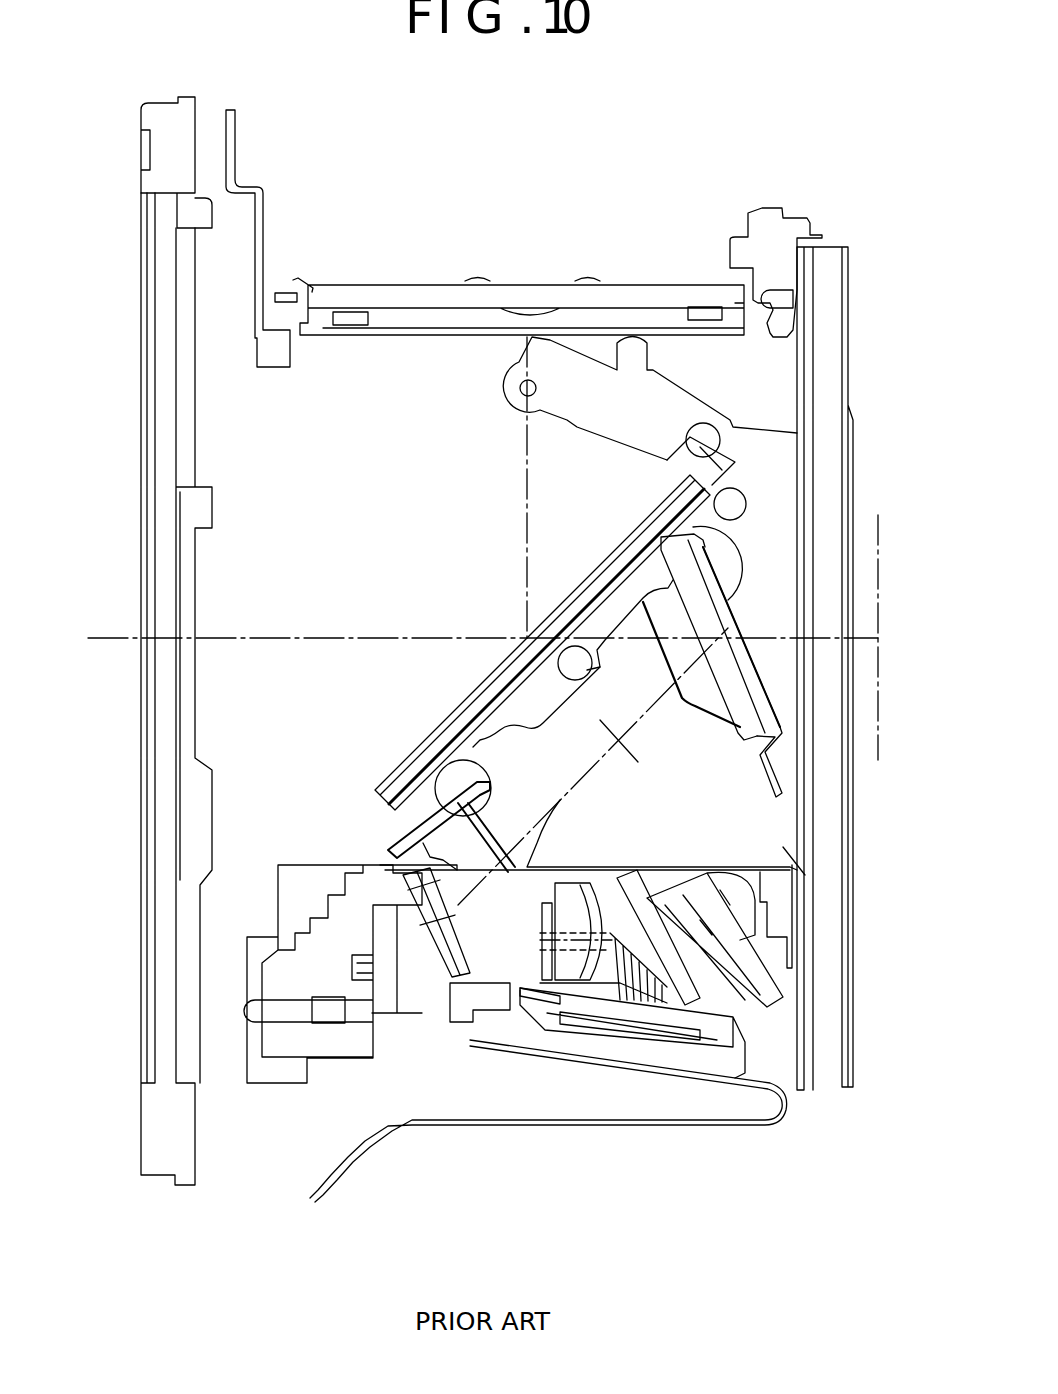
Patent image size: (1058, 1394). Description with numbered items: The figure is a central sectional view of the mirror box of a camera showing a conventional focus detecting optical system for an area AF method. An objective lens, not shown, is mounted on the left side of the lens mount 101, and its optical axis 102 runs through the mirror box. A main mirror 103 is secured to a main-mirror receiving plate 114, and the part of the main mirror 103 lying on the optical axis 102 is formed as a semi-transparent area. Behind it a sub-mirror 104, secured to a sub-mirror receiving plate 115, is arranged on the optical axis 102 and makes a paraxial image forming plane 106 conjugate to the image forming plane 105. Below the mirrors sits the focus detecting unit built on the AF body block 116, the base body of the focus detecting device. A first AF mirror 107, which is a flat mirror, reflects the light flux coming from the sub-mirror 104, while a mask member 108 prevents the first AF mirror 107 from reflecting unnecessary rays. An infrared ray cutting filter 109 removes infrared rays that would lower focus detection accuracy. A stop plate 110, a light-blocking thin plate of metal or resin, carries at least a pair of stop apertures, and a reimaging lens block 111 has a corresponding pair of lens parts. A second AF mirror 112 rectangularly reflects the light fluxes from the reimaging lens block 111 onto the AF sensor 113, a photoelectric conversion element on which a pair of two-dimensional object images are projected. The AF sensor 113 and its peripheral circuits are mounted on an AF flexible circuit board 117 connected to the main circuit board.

The lens mount 101 is at (147, 117).
The optical axis 102 is at (120, 640).
The main mirror 103 is at (438, 742).
The sub-mirror 104 is at (705, 602).
The image forming plane 105 is at (880, 548).
The paraxial image forming plane 106 is at (627, 748).
The first AF mirror 107 is at (418, 897).
The mask member 108 is at (430, 985).
The infrared ray cutting filter 109 is at (538, 1000).
The stop plate 110 is at (587, 900).
The reimaging lens block 111 is at (637, 883).
The second AF mirror 112 is at (673, 978).
The AF sensor 113 is at (733, 1058).
The main-mirror receiving plate 114 is at (590, 600).
The sub-mirror receiving plate 115 is at (764, 687).
The AF body block 116 is at (480, 993).
The AF flexible circuit board 117 is at (786, 1107).